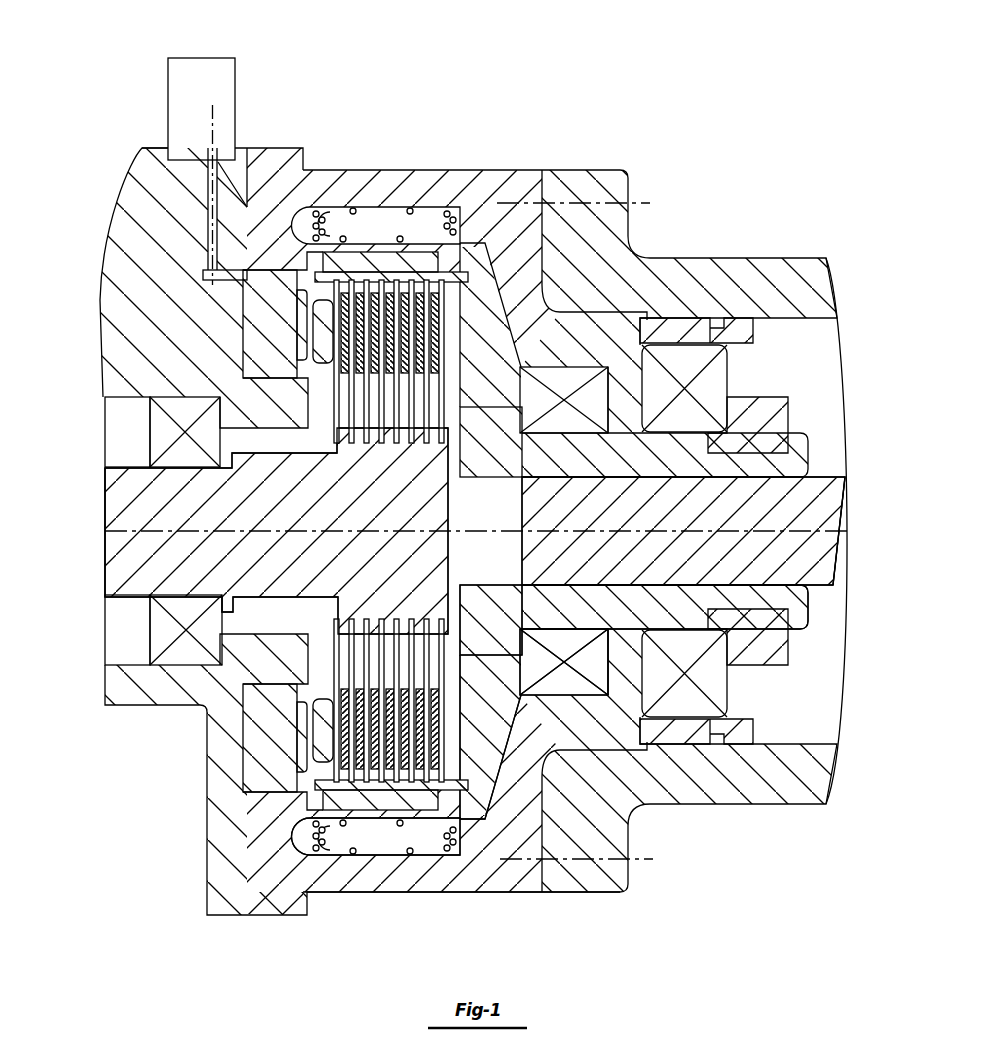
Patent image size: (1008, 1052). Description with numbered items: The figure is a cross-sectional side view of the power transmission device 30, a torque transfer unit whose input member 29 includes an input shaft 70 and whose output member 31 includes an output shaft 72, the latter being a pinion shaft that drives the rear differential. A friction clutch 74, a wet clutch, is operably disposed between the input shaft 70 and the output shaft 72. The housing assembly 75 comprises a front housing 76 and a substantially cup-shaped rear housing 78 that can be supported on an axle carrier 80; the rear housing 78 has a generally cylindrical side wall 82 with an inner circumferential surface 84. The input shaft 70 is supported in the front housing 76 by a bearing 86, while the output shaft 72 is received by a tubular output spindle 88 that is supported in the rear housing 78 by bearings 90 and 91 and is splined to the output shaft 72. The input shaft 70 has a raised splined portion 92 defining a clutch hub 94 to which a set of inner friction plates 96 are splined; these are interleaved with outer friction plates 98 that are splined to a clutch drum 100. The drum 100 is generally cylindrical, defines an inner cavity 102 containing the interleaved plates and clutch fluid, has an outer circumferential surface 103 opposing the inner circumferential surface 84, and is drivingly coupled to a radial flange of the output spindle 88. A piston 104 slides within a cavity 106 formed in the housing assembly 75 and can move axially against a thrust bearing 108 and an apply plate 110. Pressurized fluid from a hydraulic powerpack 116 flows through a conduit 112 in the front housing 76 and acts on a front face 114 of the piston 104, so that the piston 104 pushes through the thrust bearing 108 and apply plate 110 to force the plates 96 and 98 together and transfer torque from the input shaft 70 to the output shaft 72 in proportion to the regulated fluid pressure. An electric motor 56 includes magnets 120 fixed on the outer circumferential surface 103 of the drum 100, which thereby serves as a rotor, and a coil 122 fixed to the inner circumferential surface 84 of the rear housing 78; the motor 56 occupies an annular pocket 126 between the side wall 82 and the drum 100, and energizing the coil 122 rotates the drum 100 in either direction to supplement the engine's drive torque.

The input member 29 is at (100, 587).
The power transmission device 30 is at (250, 126).
The output member 31 is at (846, 490).
The electric motor 56 is at (466, 200).
The input shaft 70 is at (115, 571).
The output shaft 72 is at (818, 556).
The friction clutch 74 is at (480, 748).
The housing assembly 75 is at (120, 162).
The front housing 76 is at (162, 165).
The rear housing 78 is at (528, 212).
The axle carrier 80 is at (744, 262).
The side wall 82 is at (396, 185).
The inner circumferential surface 84 is at (330, 218).
The bearing 86 is at (160, 422).
The output spindle 88 is at (616, 600).
The bearing 90 is at (725, 378).
The bearing 91 is at (560, 640).
The raised splined portion 92 is at (427, 318).
The clutch hub 94 is at (443, 443).
The inner friction plates 96 is at (367, 425).
The outer friction plates 98 is at (436, 340).
The clutch drum 100 is at (468, 280).
The inner cavity 102 is at (463, 402).
The outer circumferential surface 103 is at (462, 262).
The piston 104 is at (262, 350).
The cavity 106 is at (300, 367).
The thrust bearing 108 is at (305, 337).
The apply plate 110 is at (338, 357).
The conduit 112 is at (226, 270).
The front face 114 is at (240, 311).
The hydraulic powerpack 116 is at (228, 58).
The magnets 120 is at (357, 263).
The coil 122 is at (425, 215).
The annular pocket 126 is at (452, 814).